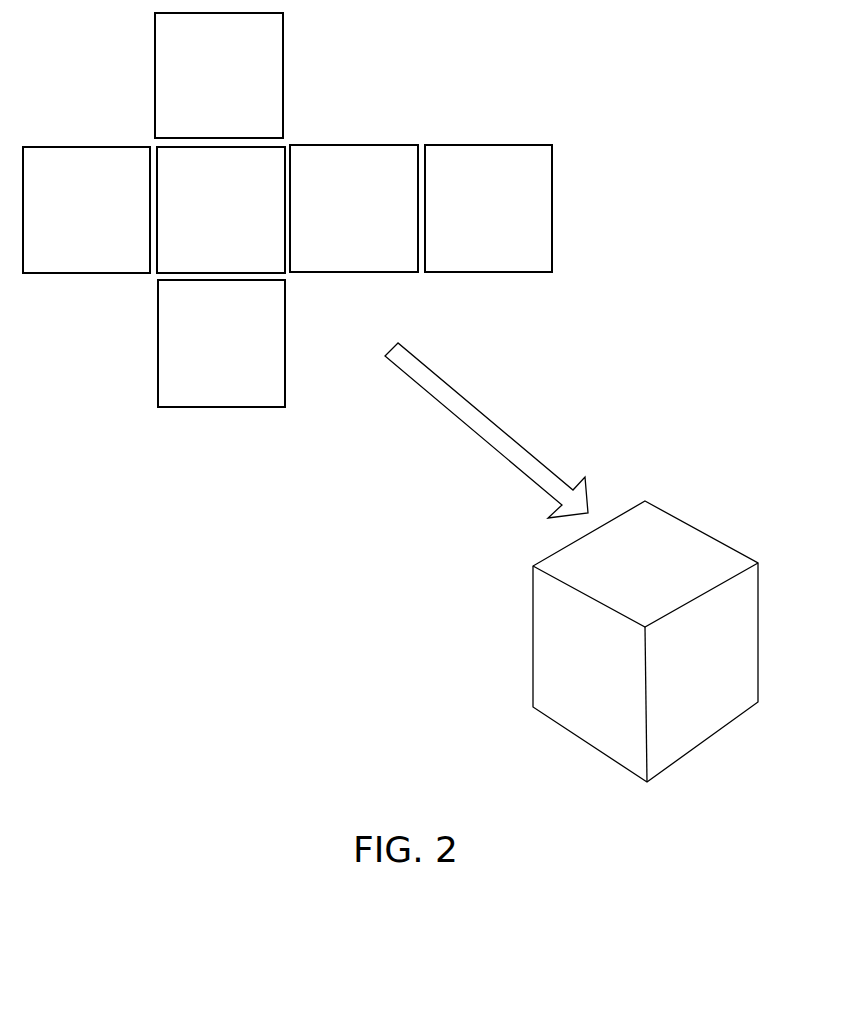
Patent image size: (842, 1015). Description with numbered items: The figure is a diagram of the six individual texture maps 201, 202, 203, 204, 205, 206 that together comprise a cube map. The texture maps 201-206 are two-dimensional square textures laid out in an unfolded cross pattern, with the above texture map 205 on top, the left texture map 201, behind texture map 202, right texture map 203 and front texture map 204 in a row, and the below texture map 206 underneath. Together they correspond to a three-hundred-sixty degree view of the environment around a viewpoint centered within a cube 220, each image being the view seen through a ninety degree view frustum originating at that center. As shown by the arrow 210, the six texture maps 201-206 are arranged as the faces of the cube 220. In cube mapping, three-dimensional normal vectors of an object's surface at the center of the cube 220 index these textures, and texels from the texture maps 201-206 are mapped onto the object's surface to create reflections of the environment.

The texture map 201 is at (86, 210).
The texture map 202 is at (221, 210).
The texture map 203 is at (354, 208).
The texture map 204 is at (488, 208).
The texture map 205 is at (219, 75).
The texture map 206 is at (221, 343).
The arrow 210 is at (489, 410).
The cube 220 is at (505, 578).